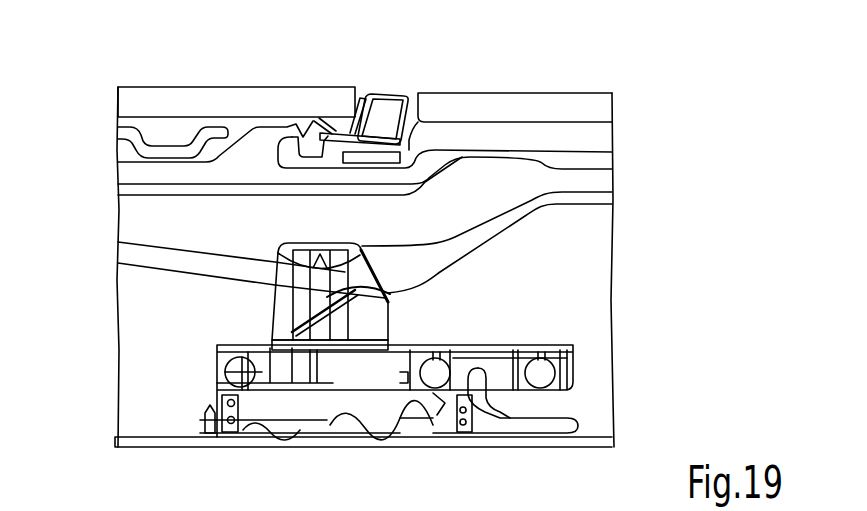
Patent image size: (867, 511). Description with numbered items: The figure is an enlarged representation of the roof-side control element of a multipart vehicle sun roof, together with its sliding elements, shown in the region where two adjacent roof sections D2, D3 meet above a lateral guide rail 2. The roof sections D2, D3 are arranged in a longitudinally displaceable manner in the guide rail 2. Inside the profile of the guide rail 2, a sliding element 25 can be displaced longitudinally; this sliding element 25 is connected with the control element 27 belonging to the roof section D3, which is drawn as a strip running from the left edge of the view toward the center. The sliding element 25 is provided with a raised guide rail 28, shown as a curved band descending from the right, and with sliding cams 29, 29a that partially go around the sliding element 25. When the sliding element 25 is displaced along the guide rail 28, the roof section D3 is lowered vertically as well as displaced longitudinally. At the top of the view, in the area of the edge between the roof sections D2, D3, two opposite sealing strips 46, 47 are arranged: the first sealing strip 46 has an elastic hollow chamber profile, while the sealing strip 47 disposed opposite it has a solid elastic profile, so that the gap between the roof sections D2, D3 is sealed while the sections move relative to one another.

The guide rail 2 is at (163, 420).
The sliding element 25 is at (433, 406).
The control element 27 is at (202, 235).
The raised guide rail 28 is at (522, 210).
The sliding cam 29 is at (345, 243).
The sliding cam 29a is at (382, 298).
The first sealing strip 46 is at (397, 93).
The sealing strip 47 is at (362, 93).
The roof section D2 is at (237, 96).
The roof section D3 is at (525, 94).